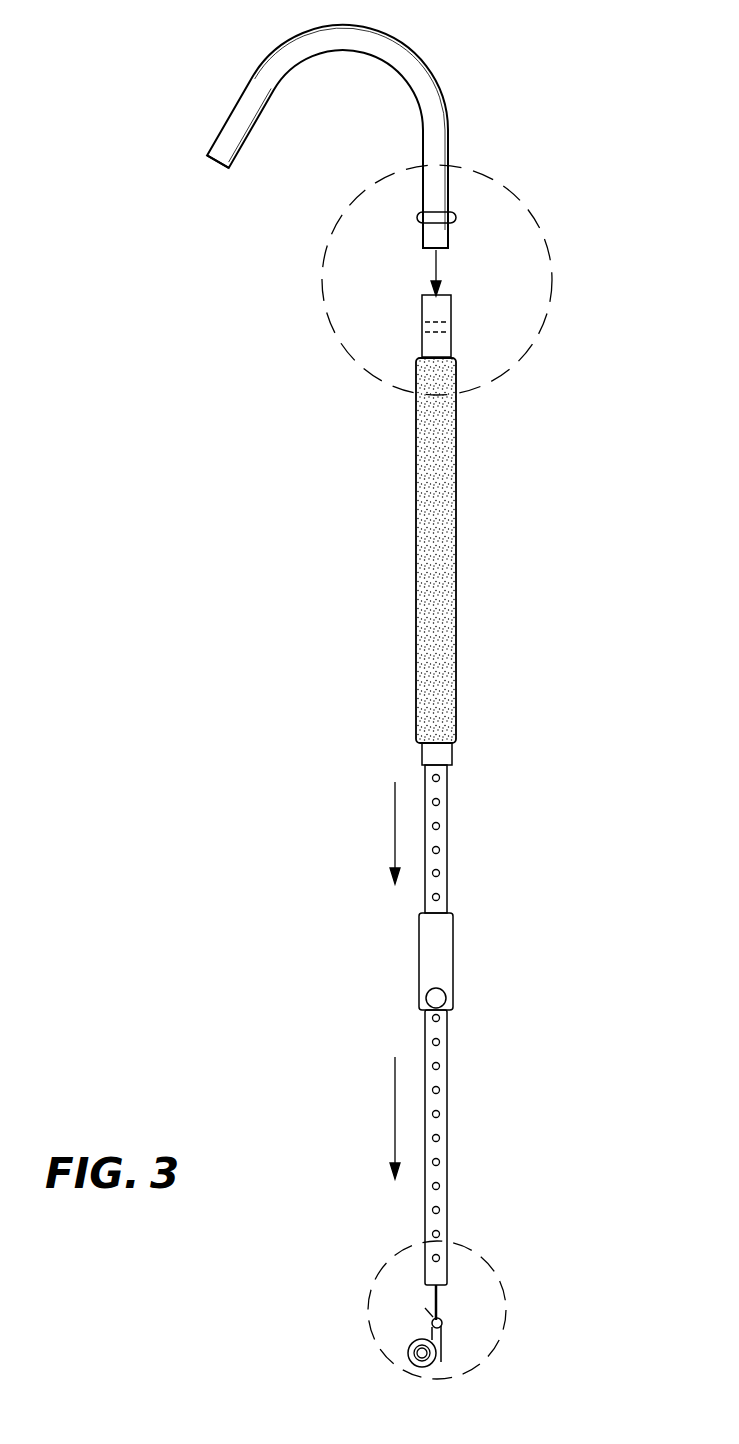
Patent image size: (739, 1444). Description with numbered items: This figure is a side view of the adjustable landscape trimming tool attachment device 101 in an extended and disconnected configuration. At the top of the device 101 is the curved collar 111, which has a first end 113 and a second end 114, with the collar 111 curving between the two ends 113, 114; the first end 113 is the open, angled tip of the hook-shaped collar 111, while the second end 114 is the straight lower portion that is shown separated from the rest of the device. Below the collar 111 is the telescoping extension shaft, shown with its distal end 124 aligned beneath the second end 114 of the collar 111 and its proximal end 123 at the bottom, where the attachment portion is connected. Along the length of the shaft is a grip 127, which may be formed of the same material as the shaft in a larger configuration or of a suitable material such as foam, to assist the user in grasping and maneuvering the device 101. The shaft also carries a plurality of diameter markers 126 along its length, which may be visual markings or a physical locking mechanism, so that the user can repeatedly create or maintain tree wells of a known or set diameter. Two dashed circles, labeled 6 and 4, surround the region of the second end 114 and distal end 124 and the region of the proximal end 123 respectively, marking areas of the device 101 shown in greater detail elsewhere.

The landscape trimming tool attachment device 101 is at (386, 576).
The curved collar 111 is at (262, 62).
The first end 113 is at (219, 171).
The second end 114 is at (449, 238).
The distal end 124 is at (451, 300).
The grip 127 is at (455, 503).
The diameter markers 126 is at (440, 802).
The proximal end 123 is at (447, 1280).
The detail view 6 region 6 is at (322, 277).
The detail view 4 region 4 is at (368, 1304).